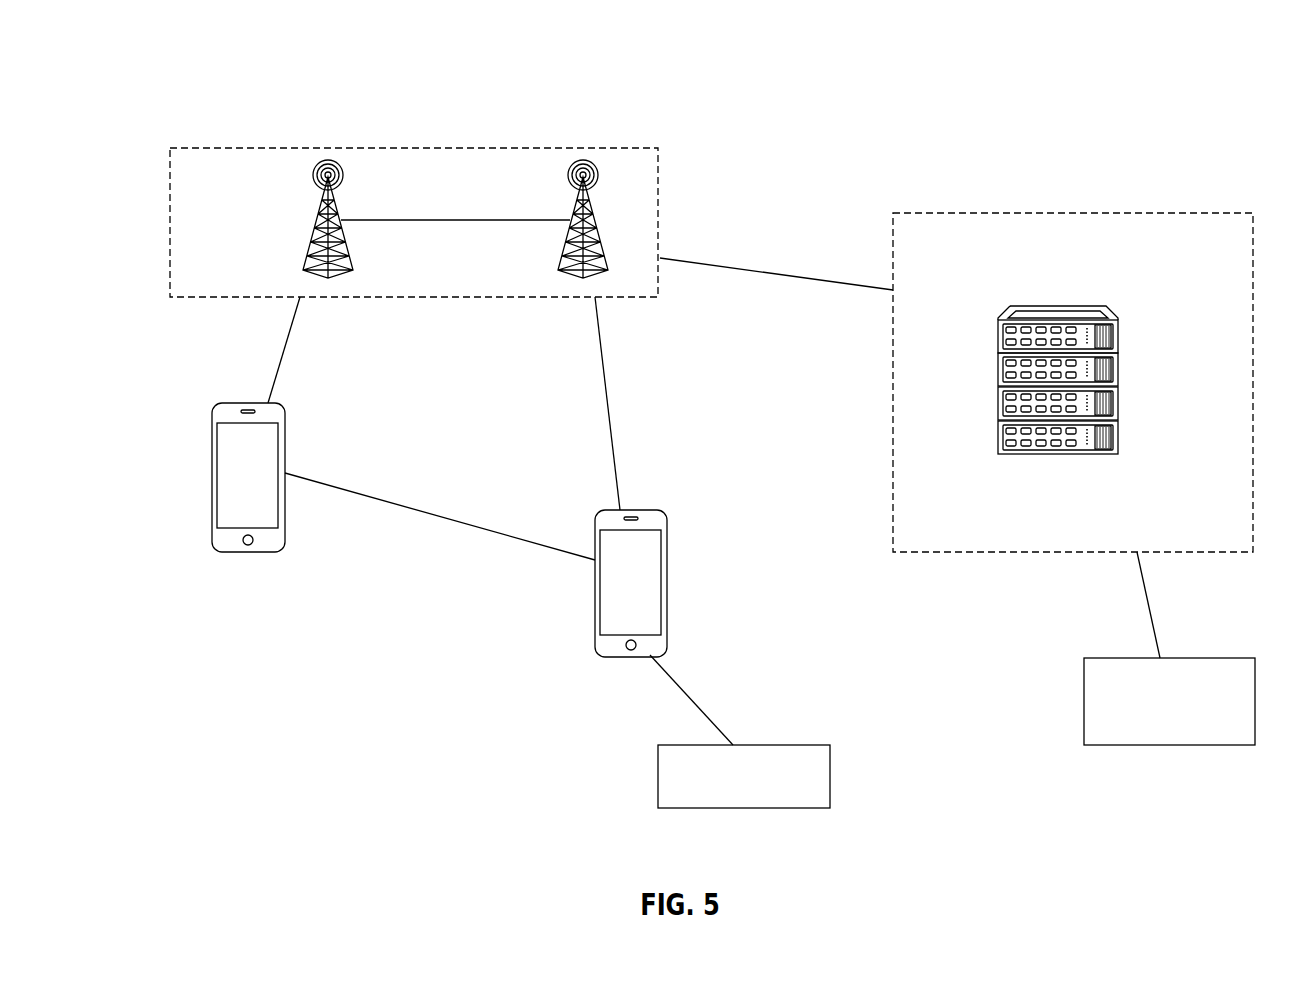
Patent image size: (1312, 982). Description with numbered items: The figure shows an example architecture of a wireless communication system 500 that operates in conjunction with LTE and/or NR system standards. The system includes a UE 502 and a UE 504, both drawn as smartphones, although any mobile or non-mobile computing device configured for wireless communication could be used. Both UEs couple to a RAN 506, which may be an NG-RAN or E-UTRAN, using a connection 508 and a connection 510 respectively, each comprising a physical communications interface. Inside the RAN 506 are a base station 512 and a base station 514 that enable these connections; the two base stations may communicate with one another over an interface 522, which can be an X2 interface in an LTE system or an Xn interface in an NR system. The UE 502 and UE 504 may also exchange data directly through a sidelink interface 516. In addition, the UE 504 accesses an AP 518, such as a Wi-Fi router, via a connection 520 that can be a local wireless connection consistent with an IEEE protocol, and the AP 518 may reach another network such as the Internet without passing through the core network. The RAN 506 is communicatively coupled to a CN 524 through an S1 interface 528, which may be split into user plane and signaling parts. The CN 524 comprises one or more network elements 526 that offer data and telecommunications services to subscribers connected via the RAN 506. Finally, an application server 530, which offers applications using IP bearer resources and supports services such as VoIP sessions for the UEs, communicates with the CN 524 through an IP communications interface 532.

The wireless communication system 500 is at (1170, 80).
The UE 502 is at (212, 432).
The UE 504 is at (668, 543).
The RAN 506 is at (417, 148).
The connection 508 is at (288, 340).
The connection 510 is at (605, 386).
The base station 512 is at (320, 196).
The base station 514 is at (575, 196).
The sidelink interface 516 is at (433, 514).
The AP 518 is at (658, 791).
The connection 520 is at (680, 688).
The interface 522 is at (407, 221).
The CN 524 is at (1078, 213).
The network elements 526 is at (1120, 337).
The S1 interface 528 is at (750, 270).
The application server 530 is at (1084, 678).
The IP communications interface 532 is at (1152, 620).